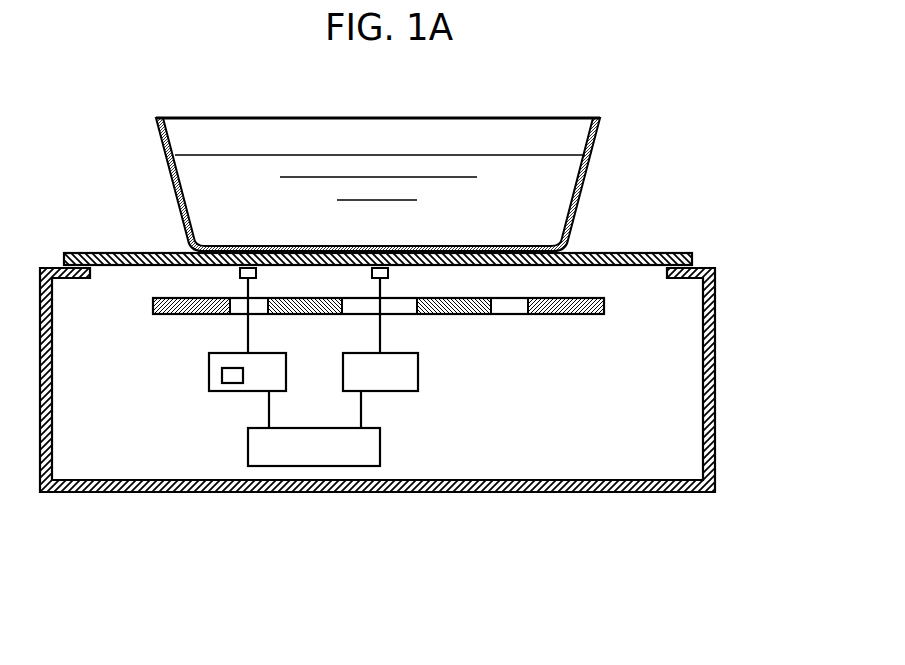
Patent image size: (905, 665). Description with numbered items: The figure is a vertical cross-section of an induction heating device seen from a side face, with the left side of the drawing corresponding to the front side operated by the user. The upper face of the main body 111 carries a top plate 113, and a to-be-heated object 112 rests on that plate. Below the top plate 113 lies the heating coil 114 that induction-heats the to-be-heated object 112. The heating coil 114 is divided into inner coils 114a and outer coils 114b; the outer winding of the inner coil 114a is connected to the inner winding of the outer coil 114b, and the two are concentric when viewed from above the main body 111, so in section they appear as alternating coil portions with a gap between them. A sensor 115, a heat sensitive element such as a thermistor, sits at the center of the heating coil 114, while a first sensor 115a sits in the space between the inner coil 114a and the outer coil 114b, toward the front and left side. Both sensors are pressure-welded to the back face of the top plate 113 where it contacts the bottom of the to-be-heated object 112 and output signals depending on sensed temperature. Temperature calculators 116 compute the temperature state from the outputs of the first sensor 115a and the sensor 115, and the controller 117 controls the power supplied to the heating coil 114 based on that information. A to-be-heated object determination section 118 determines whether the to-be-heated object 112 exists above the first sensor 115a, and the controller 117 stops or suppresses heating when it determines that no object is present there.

The main body 111 is at (717, 273).
The to-be-heated object 112 is at (600, 125).
The top plate 113 is at (693, 252).
The heating coil 114 is at (434, 329).
The inner coil 114a is at (305, 316).
The outer coil 114b is at (153, 306).
The sensor 115 is at (388, 273).
The first sensor 115a is at (238, 272).
The temperature calculator 116 is at (209, 362).
The controller 117 is at (382, 449).
The to-be-heated object determination section 118 is at (221, 378).